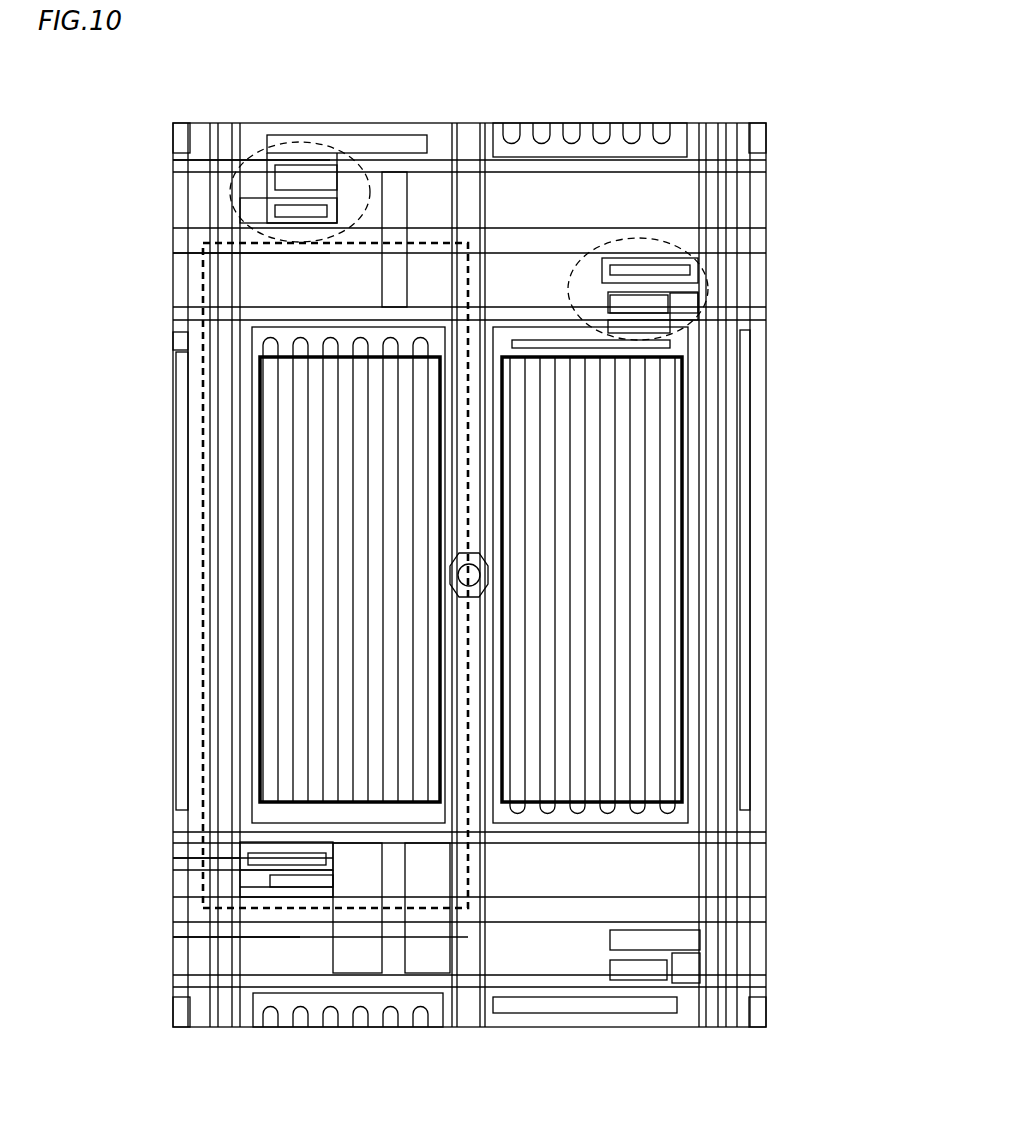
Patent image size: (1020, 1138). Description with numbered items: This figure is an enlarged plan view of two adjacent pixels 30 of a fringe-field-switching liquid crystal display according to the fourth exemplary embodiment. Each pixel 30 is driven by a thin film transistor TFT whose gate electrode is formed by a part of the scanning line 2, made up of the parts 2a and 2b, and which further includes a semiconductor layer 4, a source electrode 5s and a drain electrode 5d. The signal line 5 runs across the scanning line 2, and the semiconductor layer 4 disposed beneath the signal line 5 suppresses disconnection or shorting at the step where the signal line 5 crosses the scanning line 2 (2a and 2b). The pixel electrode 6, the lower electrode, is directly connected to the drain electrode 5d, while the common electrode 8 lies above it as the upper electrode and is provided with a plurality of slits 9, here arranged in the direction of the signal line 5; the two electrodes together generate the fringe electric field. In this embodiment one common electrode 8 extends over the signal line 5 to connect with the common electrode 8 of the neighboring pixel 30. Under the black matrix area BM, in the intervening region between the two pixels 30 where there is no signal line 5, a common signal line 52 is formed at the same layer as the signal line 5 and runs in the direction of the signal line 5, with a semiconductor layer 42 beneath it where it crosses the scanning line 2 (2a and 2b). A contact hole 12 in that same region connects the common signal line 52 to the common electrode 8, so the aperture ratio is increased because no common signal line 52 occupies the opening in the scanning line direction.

The scanning line 2 is at (77, 208).
The scanning line part 2a is at (187, 203).
The scanning line part 2b is at (277, 278).
The semiconductor layer 4 is at (303, 863).
The signal line 5 is at (215, 995).
The drain electrode 5d is at (300, 185).
The source electrode 5s is at (288, 210).
The pixel electrode 6 is at (687, 397).
The common electrode 8 is at (712, 325).
The slits 9 is at (600, 470).
The contact hole 12 is at (490, 578).
The pixel 30 is at (357, 908).
The semiconductor layer 42 is at (488, 920).
The common signal line 52 is at (458, 990).
The thin film transistor TFT is at (330, 152).
The black matrix area BM is at (258, 560).